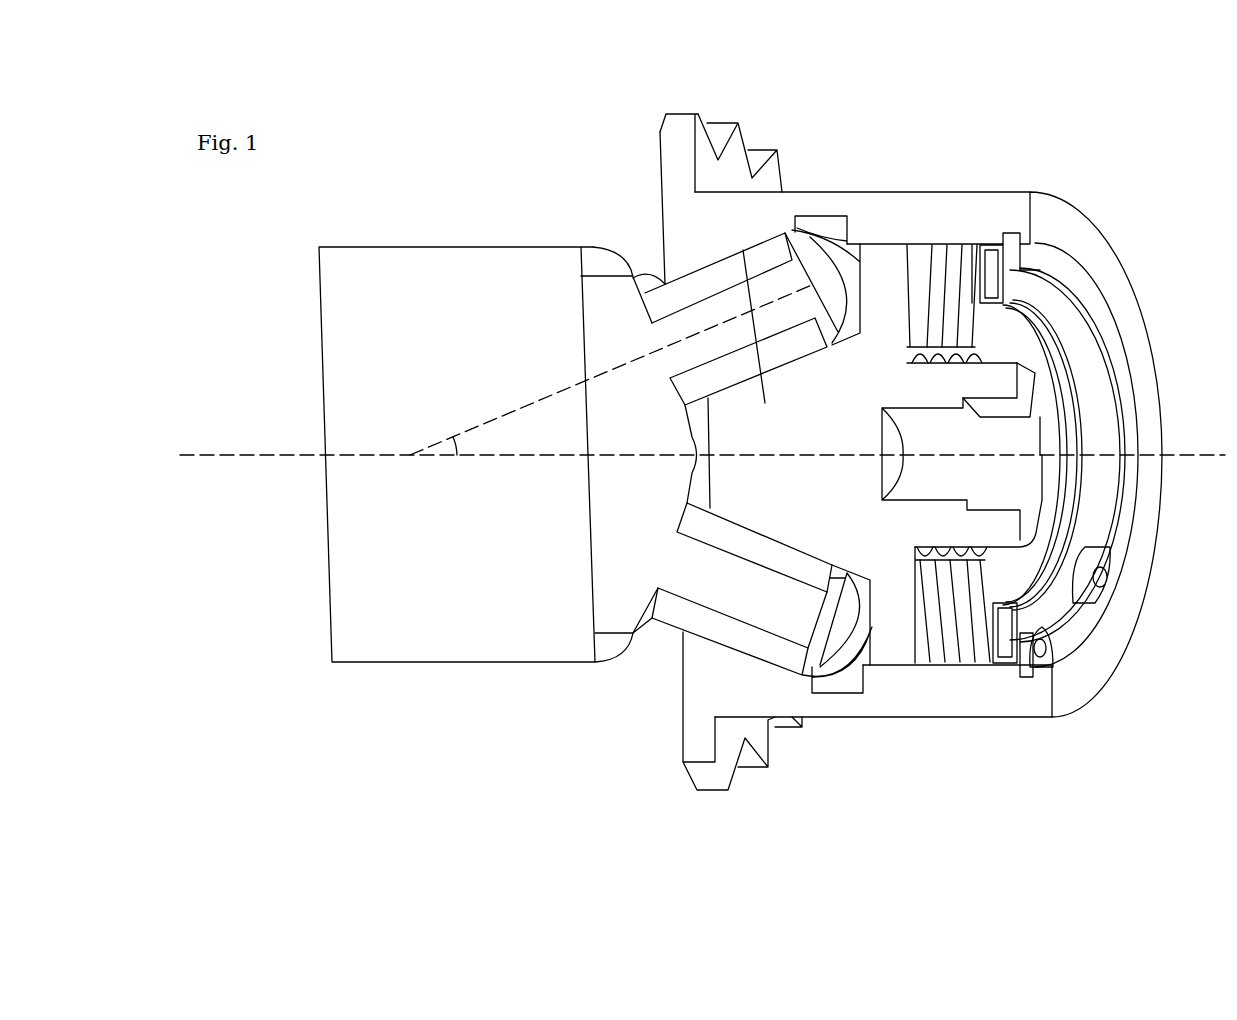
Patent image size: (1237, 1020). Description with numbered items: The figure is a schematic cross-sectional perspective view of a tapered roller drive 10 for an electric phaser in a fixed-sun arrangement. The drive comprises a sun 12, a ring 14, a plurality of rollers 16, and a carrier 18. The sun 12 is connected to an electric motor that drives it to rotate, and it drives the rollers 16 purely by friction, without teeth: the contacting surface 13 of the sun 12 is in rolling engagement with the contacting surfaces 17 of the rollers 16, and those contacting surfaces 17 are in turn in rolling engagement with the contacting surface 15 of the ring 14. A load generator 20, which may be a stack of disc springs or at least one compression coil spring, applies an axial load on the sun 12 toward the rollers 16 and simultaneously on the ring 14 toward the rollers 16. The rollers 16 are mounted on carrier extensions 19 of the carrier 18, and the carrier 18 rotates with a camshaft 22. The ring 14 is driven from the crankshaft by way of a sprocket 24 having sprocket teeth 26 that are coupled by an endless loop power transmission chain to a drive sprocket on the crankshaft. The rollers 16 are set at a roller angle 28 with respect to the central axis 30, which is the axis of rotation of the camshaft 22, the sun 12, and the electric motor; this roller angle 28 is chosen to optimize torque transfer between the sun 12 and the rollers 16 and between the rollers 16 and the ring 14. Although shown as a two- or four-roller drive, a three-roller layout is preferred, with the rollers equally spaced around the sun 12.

The tapered roller drive 10 is at (1145, 121).
The sun 12 is at (926, 455).
The contacting surface of the sun 13 is at (680, 627).
The ring 14 is at (752, 461).
The contacting surface of the ring 15 is at (762, 341).
The rollers 16 is at (758, 643).
The contacting surfaces of the rollers 17 is at (708, 263).
The carrier 18 is at (645, 454).
The carrier extensions 19 is at (621, 453).
The load generator 20 is at (987, 650).
The camshaft 22 is at (457, 454).
The sprocket 24 is at (678, 160).
The sprocket teeth 26 is at (775, 167).
The roller angle 28 is at (470, 445).
The central axis 30 is at (687, 456).